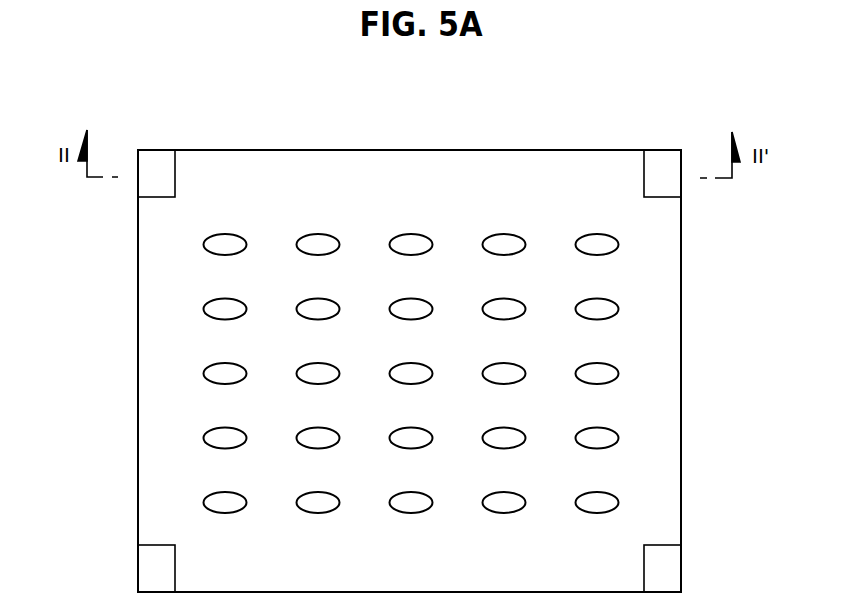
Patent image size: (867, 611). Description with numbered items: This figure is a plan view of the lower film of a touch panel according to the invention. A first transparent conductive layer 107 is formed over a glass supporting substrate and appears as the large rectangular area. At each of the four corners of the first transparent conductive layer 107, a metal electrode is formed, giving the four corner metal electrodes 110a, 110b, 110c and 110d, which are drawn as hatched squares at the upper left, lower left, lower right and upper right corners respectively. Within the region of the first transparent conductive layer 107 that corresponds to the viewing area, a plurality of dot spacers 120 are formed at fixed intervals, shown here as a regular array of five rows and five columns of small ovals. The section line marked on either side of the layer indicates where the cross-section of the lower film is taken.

The first transparent conductive layer 107 is at (648, 471).
The metal electrode 110a is at (155, 172).
The metal electrode 110b is at (155, 568).
The metal electrode 110c is at (665, 573).
The metal electrode 110d is at (665, 172).
The dot spacers 120 is at (413, 501).